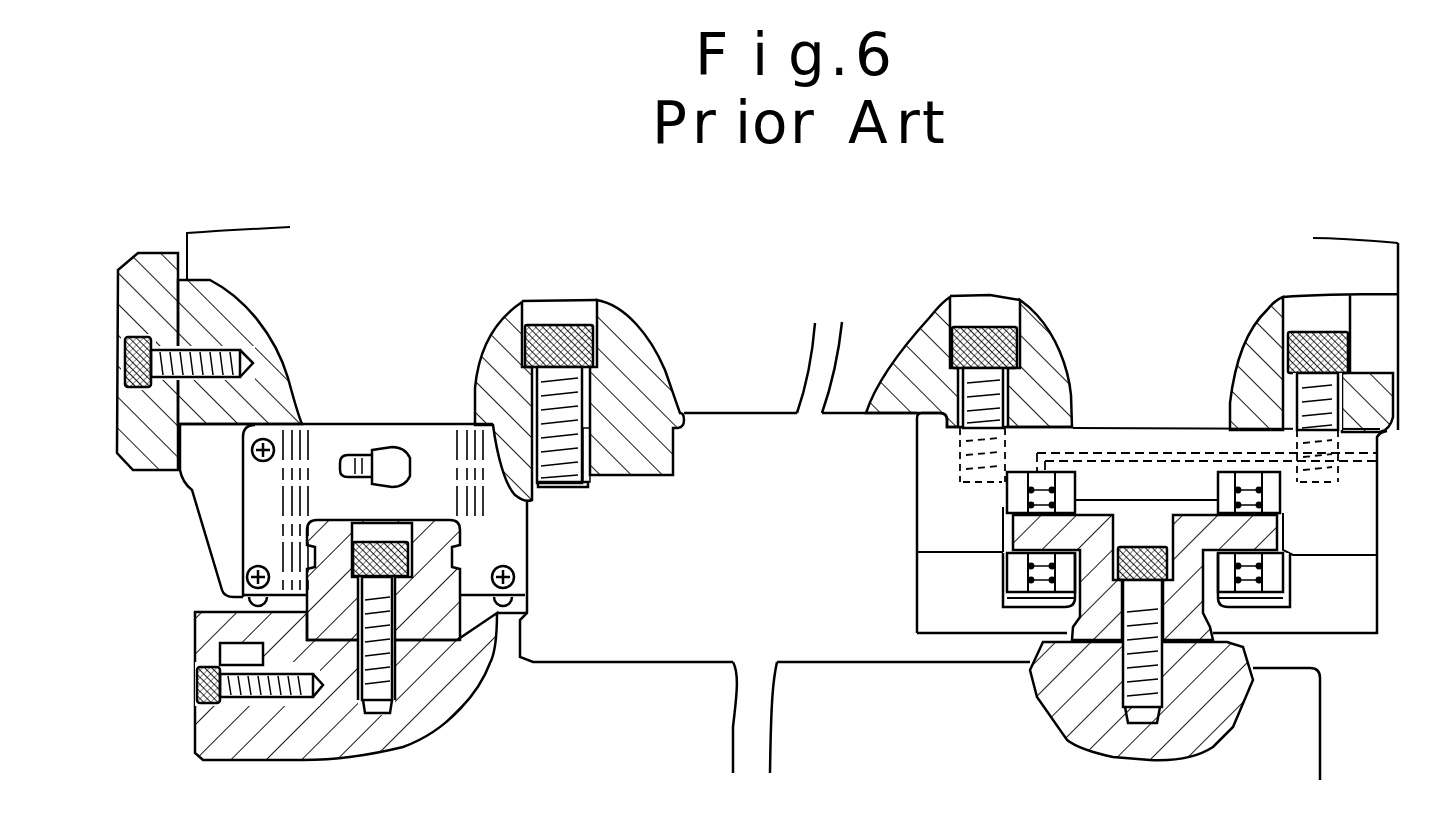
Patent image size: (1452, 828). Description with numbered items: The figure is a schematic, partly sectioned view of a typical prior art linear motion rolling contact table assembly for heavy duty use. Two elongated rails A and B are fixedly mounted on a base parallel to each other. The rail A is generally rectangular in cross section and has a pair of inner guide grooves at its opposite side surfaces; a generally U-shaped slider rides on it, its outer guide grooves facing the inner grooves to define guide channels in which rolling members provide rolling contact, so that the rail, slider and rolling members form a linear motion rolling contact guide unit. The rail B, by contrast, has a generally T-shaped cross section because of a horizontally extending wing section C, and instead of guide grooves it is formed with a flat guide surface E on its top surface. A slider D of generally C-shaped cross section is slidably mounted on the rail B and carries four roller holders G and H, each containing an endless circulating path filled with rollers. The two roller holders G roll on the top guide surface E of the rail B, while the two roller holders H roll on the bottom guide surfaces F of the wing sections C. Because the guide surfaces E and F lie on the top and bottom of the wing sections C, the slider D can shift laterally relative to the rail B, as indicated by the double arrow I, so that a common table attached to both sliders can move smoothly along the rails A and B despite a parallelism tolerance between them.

The rail A is at (433, 627).
The rail B is at (1190, 537).
The wing section C is at (1260, 532).
The slider D is at (1357, 470).
The guide surface E is at (1212, 510).
The bottom guide surfaces F is at (1267, 558).
The roller holders G is at (1272, 493).
The roller holders H is at (1267, 585).
The double arrow I is at (1143, 416).